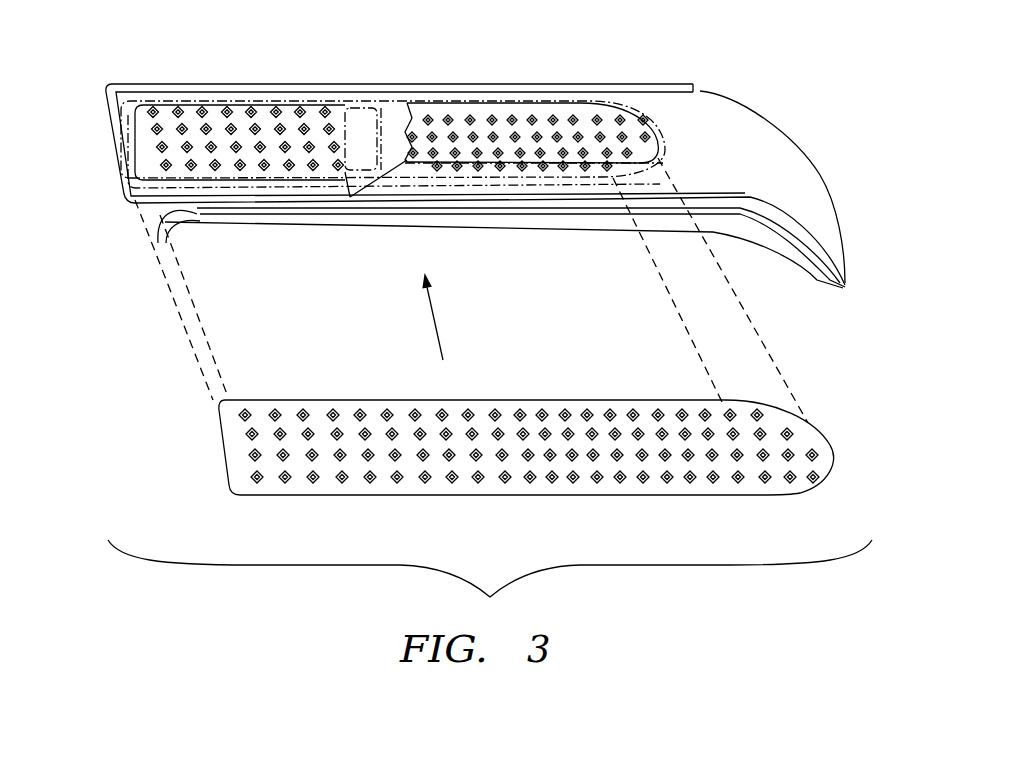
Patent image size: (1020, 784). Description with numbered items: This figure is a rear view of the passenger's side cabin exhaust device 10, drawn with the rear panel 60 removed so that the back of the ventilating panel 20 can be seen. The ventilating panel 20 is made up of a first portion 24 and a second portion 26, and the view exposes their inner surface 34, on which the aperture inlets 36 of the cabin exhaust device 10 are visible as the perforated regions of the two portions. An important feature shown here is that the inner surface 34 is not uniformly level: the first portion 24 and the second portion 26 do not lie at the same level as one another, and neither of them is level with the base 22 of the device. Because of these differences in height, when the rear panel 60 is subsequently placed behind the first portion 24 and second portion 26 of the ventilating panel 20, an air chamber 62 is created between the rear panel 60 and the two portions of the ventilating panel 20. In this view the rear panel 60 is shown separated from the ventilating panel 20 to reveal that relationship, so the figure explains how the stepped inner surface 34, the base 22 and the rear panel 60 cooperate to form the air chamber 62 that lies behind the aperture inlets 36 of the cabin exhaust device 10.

The cabin exhaust device 10 is at (345, 238).
The ventilating panel 20 is at (780, 144).
The base 22 is at (802, 177).
The first portion 24 is at (212, 120).
The second portion 26 is at (502, 130).
The inner surface 34 is at (745, 130).
The aperture inlets 36 is at (470, 121).
The rear panel 60 is at (290, 400).
The air chamber 62 is at (157, 135).